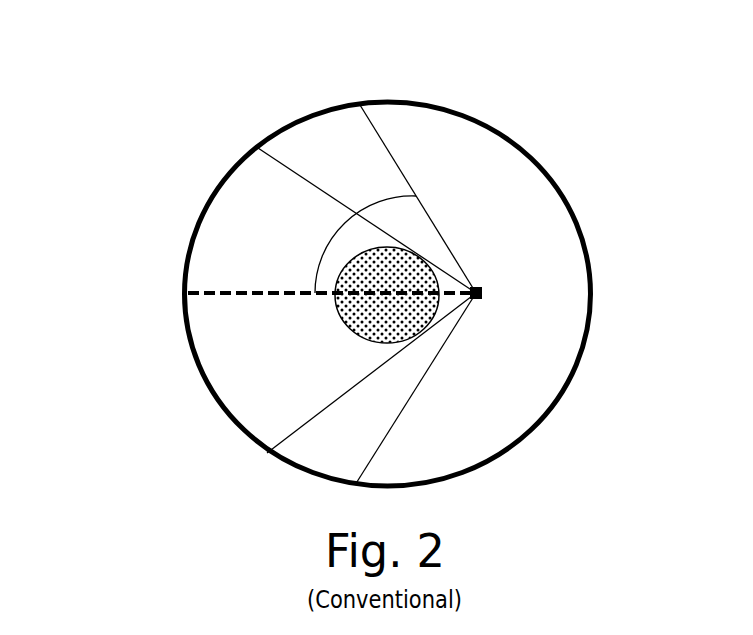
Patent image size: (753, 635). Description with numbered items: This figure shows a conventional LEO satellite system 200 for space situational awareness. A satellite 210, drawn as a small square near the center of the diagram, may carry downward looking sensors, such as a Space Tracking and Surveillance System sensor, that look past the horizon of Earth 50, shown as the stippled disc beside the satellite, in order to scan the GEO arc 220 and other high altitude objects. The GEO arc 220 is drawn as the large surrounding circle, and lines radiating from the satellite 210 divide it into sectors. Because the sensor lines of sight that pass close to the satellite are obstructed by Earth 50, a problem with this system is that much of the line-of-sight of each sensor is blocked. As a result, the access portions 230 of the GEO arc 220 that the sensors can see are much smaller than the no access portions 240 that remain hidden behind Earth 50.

The LEO satellite system 200 is at (150, 67).
The GEO arc 220 is at (513, 165).
The access portions 230 is at (328, 157).
The no access portions 240 is at (272, 238).
The Earth 50 is at (338, 315).
The satellite 210 is at (483, 292).